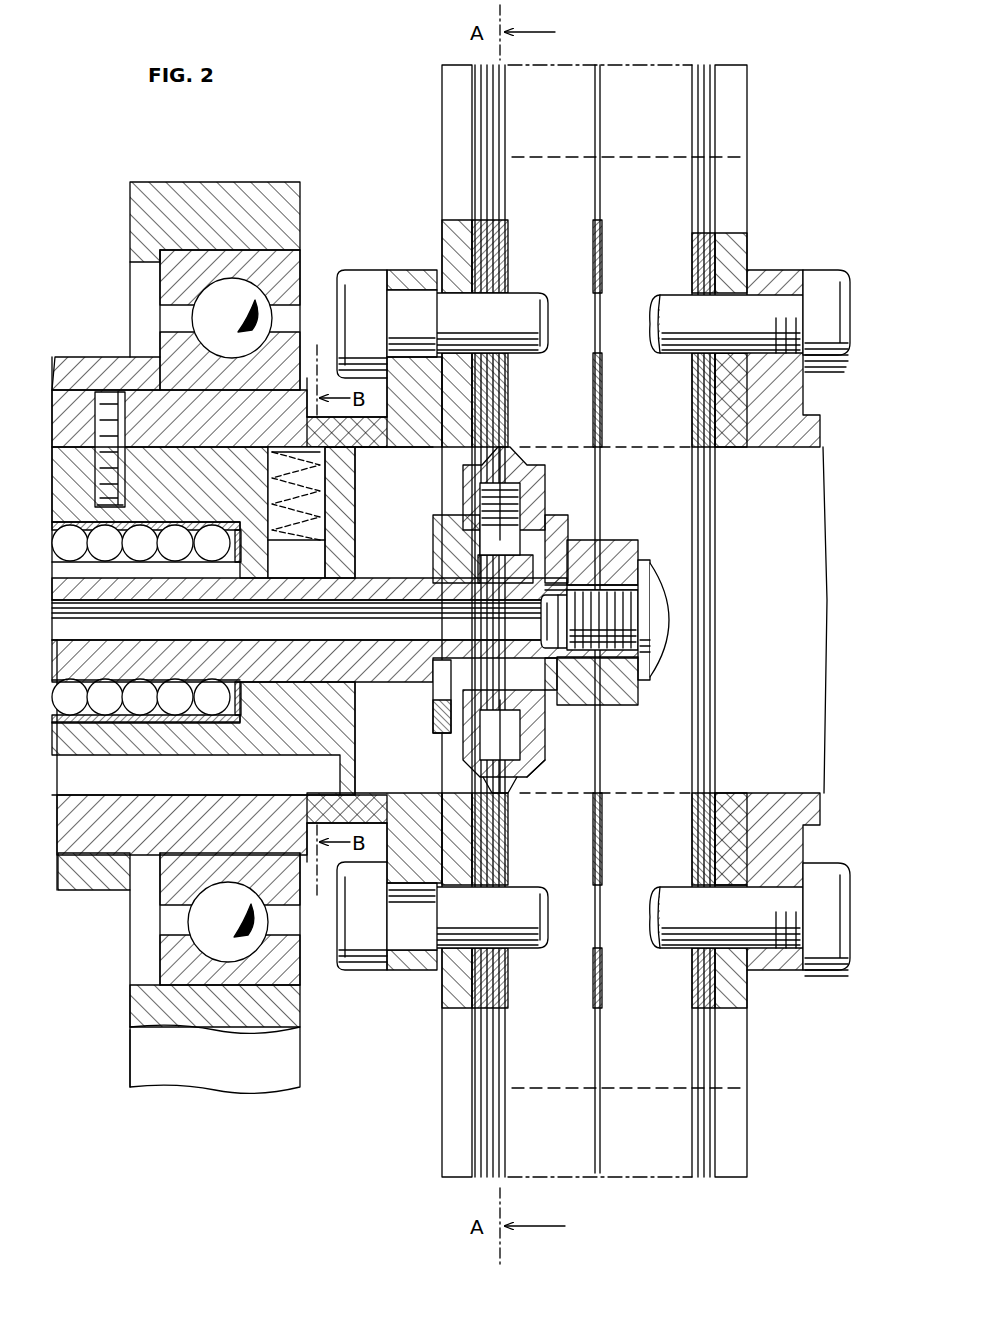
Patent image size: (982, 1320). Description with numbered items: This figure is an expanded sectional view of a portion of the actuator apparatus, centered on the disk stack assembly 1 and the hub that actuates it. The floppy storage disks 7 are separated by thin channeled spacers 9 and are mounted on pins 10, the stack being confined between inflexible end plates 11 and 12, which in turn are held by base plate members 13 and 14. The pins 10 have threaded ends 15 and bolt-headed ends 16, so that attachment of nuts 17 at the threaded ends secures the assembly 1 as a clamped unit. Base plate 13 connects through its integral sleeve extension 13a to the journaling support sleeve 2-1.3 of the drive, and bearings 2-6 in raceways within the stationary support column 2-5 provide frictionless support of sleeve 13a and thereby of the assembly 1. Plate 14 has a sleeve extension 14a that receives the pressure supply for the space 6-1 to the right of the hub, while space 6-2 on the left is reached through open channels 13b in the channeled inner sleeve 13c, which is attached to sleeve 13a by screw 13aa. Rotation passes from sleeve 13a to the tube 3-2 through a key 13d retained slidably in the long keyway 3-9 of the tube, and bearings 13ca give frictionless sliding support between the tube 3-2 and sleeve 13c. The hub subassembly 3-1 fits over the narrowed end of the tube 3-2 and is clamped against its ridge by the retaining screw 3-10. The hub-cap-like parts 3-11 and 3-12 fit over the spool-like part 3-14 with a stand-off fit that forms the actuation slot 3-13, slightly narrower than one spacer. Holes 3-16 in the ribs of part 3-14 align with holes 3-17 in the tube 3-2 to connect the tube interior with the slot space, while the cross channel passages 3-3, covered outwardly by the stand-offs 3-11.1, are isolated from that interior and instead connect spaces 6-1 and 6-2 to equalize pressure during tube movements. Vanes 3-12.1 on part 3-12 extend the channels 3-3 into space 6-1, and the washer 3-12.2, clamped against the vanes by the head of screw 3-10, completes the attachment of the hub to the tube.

The assembly 1 is at (778, 97).
The elevated support column 2-5 is at (183, 182).
The bearings 2-6 is at (228, 318).
The journaling support sleeve 2-1.3 is at (287, 352).
The sleeve extension 13a is at (150, 418).
The screw 13aa is at (97, 417).
The channeled inner sleeve 13c is at (62, 470).
The bearings 13ca is at (148, 540).
The key 13d is at (307, 562).
The open channels 13b is at (340, 776).
The space 6-2 is at (394, 512).
The space 6-1 is at (643, 471).
The keyway 3-9 is at (353, 575).
The spool-like part 3-14 is at (455, 517).
The actuation slot 3-13 is at (505, 460).
The hub subassembly 3-1 is at (545, 486).
The vanes 3-12.1 is at (572, 512).
The washer 3-12.2 is at (600, 547).
The holes 3-17 is at (497, 590).
The holes 3-16 is at (508, 578).
The tube 3-2 is at (392, 683).
The stand-offs 3-11.1 is at (440, 690).
The hub-cap-like part 3-11 is at (470, 755).
The cross channel passages 3-3 is at (530, 670).
The hub-cap-like part 3-12 is at (545, 755).
The retaining screw 3-10 is at (662, 660).
The disks 7 is at (490, 110).
The channeled spacers 9 is at (615, 390).
The pins 10 is at (650, 320).
The end plate 11 is at (442, 140).
The end plate 12 is at (747, 150).
The base plate 13 is at (410, 270).
The base plate 14 is at (768, 290).
The sleeve extension 14a is at (826, 445).
The threaded ends 15 is at (790, 312).
The bolt-headed ends 16 is at (355, 270).
The nuts 17 is at (830, 373).